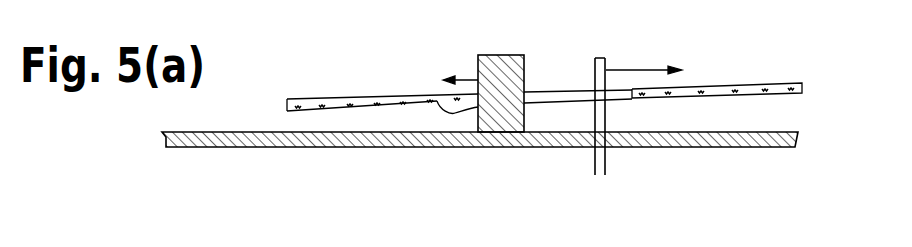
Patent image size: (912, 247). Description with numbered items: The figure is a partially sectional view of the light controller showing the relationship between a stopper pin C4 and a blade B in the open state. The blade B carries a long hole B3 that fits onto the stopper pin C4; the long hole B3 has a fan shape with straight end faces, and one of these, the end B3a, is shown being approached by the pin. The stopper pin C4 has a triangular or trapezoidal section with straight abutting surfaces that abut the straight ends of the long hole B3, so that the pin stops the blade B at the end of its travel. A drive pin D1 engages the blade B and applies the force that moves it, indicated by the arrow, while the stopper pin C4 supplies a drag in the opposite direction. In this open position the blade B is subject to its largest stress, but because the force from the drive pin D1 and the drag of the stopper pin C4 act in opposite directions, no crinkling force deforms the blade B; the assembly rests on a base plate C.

The end of long hole B3a is at (445, 102).
The stopper pin C4 is at (503, 56).
The long hole B3 is at (557, 95).
The drive pin D1 is at (607, 56).
The blade B is at (715, 85).
The base plate C is at (777, 133).